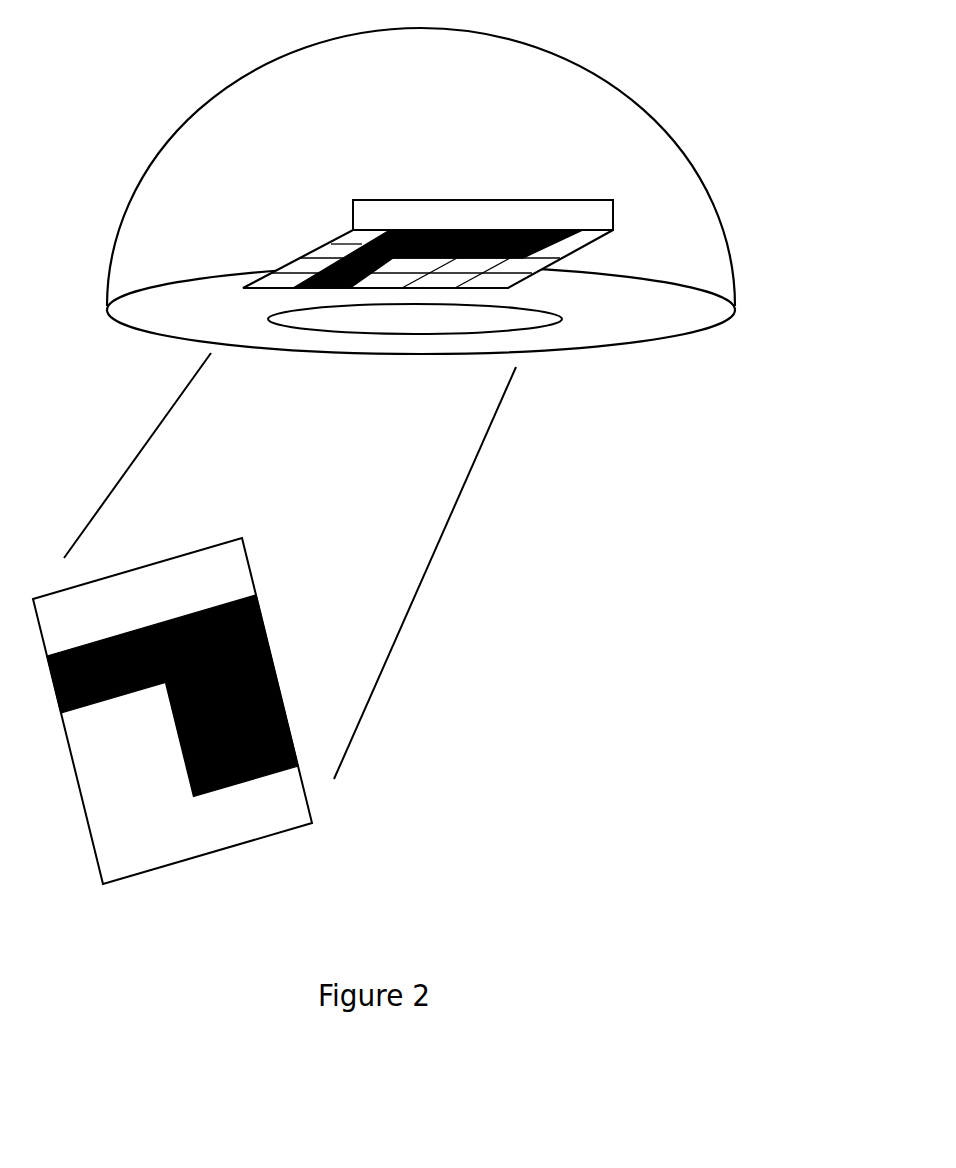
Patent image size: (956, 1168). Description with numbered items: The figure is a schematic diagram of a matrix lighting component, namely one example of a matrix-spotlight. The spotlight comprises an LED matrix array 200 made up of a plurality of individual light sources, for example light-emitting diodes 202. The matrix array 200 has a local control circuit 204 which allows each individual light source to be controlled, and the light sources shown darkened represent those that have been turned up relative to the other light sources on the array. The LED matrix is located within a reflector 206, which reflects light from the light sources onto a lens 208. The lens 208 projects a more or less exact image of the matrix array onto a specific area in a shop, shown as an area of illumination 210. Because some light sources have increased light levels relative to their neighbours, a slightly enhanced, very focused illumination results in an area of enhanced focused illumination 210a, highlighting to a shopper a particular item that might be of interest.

The LED matrix array 200 is at (581, 247).
The light-emitting diodes 202 is at (326, 268).
The local control circuit 204 is at (568, 208).
The reflector 206 is at (513, 40).
The lens 208 is at (552, 326).
The area of illumination 210 is at (311, 824).
The area of enhanced focused illumination 210a is at (264, 620).